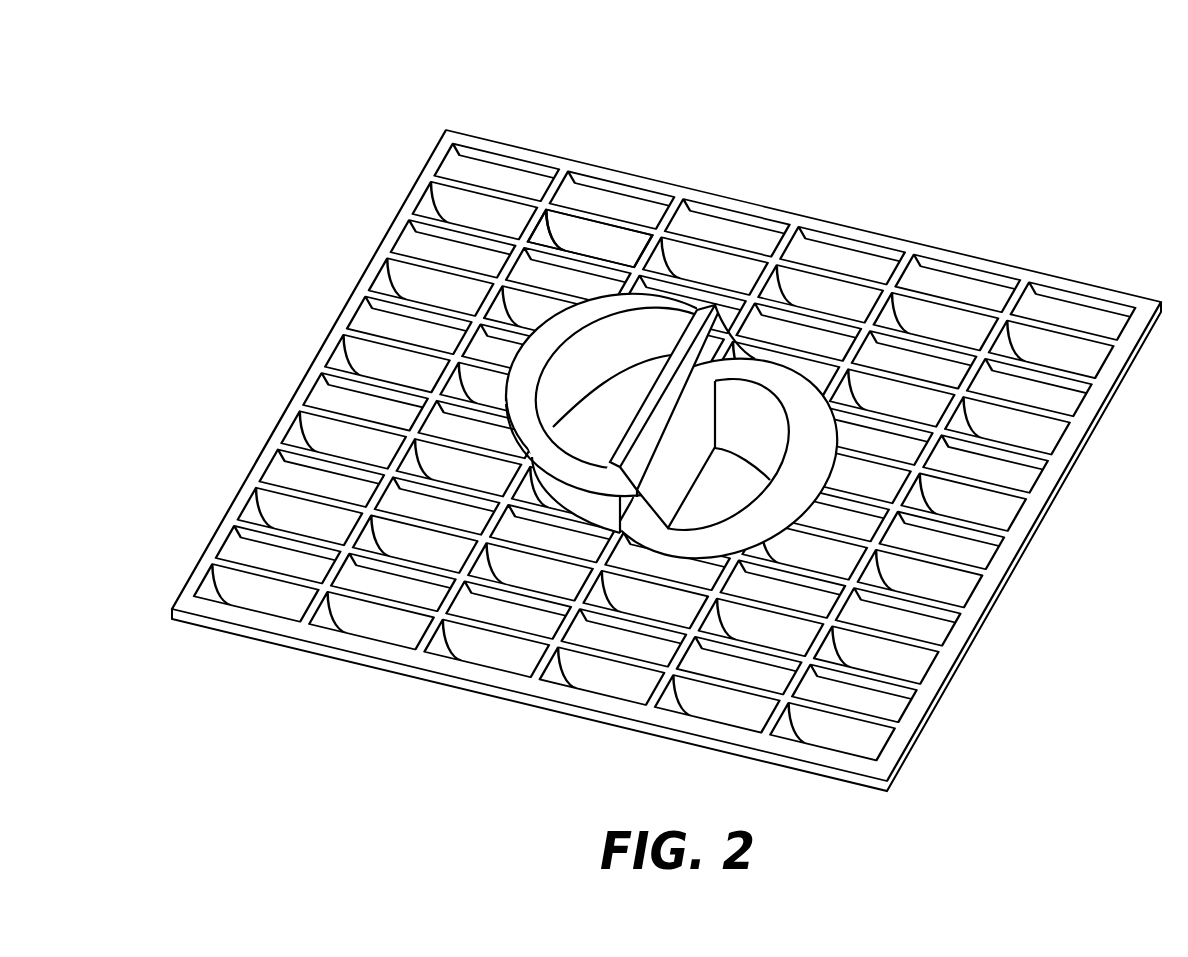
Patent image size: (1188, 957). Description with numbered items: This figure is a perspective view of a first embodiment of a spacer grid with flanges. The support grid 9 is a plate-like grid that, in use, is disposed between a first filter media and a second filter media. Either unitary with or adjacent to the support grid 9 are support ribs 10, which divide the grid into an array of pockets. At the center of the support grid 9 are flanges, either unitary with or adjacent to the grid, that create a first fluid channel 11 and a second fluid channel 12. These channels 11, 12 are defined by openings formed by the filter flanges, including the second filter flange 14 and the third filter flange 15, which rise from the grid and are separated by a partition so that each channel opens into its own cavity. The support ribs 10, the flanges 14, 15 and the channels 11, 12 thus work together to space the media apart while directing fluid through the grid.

The support grid 9 is at (447, 130).
The support ribs 10 is at (587, 233).
The first fluid channel 11 is at (733, 470).
The second fluid channel 12 is at (617, 370).
The second filter flange 14 is at (835, 440).
The third filter flange 15 is at (716, 312).